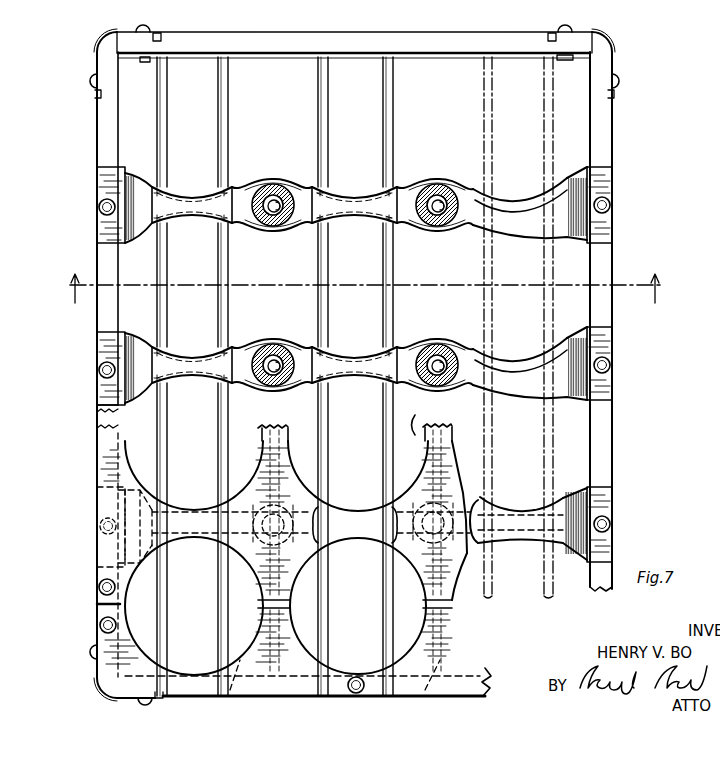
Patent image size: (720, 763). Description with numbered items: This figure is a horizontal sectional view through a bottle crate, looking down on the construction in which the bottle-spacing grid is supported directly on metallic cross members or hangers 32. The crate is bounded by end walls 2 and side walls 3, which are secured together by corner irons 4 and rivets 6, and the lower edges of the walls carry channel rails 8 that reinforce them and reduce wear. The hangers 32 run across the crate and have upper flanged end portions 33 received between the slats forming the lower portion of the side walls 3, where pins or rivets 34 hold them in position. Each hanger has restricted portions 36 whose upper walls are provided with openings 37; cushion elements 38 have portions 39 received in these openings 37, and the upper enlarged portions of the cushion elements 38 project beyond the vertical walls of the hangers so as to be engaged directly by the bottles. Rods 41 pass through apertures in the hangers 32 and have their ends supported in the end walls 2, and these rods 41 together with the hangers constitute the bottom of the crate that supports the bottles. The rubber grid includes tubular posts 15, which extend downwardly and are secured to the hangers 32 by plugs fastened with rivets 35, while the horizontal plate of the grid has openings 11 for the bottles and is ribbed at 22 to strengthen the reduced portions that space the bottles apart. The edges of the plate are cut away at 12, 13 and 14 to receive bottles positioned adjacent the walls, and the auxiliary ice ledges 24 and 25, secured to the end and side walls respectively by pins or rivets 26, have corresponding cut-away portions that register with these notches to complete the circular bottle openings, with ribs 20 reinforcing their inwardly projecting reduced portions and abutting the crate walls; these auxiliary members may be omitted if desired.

The end walls 2 is at (254, 45).
The side walls 3 is at (103, 313).
The corner irons 4 is at (96, 50).
The rivets 6 is at (89, 82).
The channel rails 8 is at (362, 26).
The openings 11 is at (425, 415).
The cut-away portion 12 is at (378, 545).
The cut-away portion 13 is at (212, 548).
The cut-away portion 14 is at (262, 447).
The tubular posts 15 is at (270, 229).
The ribs 20 is at (120, 540).
The ribs 22 is at (285, 435).
The ice ledge 24 is at (290, 660).
The ice ledge 25 is at (108, 461).
The pins or rivets 26 is at (100, 625).
The cross members or hangers 32 is at (271, 182).
The upper flanged end portions 33 is at (105, 185).
The pins or rivets 34 is at (99, 208).
The rivets 35 is at (282, 192).
The restricted portions 36 is at (507, 195).
The openings 37 is at (530, 212).
The cushion elements 38 is at (182, 200).
The portions 39 is at (325, 2).
The rods 41 is at (222, 130).